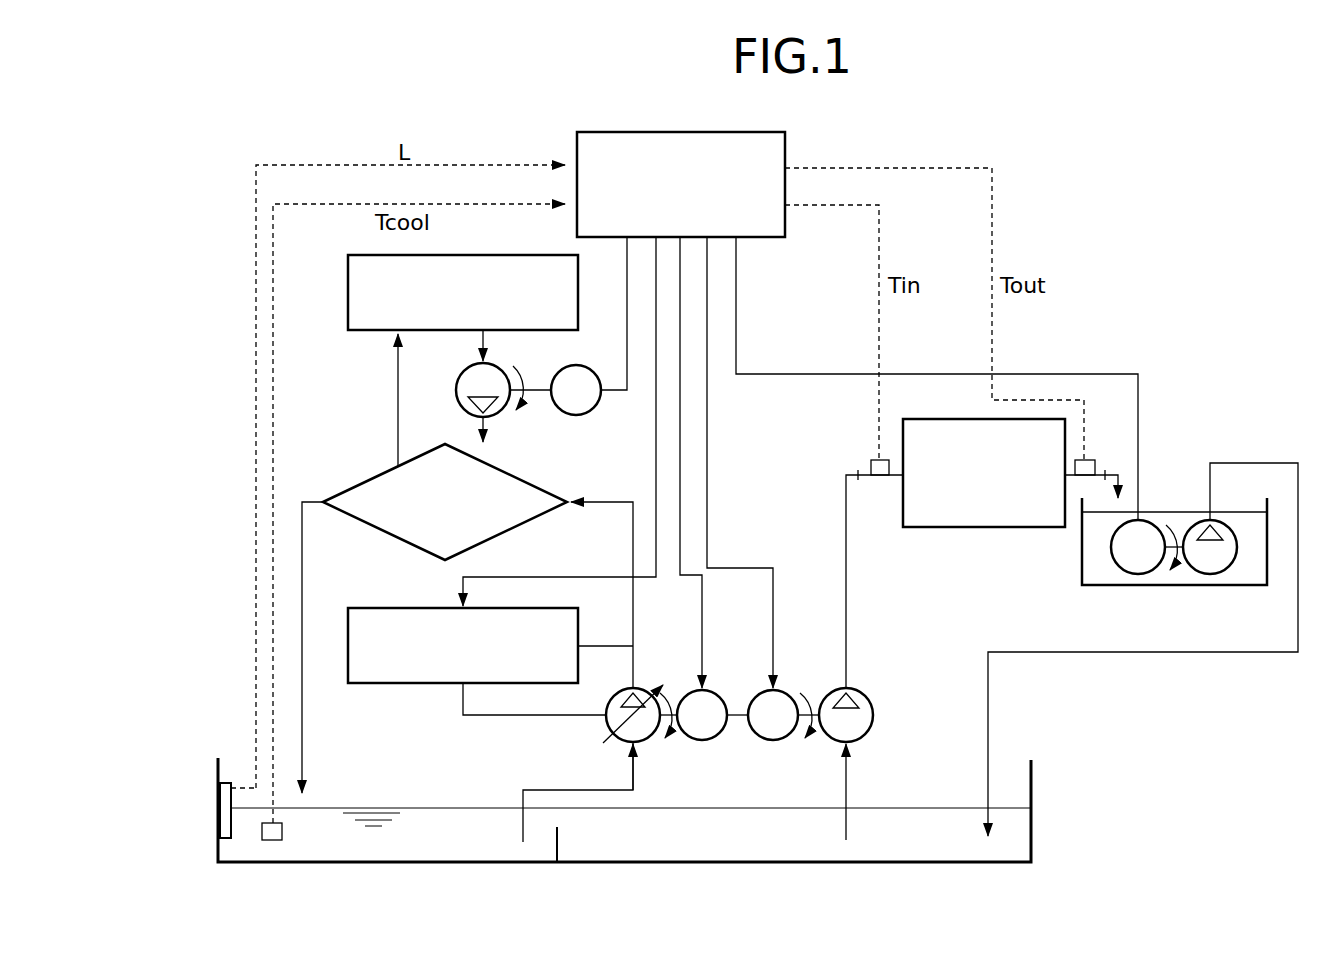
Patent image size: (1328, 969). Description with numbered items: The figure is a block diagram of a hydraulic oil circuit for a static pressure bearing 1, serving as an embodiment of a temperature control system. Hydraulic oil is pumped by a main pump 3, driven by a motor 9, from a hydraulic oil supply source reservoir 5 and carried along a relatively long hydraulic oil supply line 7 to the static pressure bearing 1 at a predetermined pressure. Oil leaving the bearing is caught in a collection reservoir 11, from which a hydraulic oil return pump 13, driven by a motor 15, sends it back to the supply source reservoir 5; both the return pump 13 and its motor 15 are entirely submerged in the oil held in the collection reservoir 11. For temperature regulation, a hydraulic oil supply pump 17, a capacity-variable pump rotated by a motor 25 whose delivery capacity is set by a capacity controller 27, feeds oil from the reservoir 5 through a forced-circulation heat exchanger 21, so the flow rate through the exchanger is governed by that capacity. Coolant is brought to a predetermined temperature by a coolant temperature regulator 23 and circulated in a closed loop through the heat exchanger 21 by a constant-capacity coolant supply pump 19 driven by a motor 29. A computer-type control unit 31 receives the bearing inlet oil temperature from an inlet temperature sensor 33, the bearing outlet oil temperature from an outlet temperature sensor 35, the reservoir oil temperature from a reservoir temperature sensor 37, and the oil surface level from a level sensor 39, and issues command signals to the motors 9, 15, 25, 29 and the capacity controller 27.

The static pressure bearing 1 is at (978, 527).
The main pump 3 is at (853, 690).
The hydraulic oil supply source reservoir 5 is at (1033, 776).
The hydraulic oil supply line 7 is at (846, 555).
The motor 9 is at (783, 690).
The collection reservoir 11 is at (1082, 548).
The hydraulic oil return pump 13 is at (1213, 517).
The motor 15 is at (1148, 520).
The hydraulic oil supply pump 17 is at (640, 690).
The coolant supply pump 19 is at (500, 372).
The heat exchanger 21 is at (505, 470).
The coolant temperature regulator 23 is at (480, 255).
The motor 25 is at (712, 690).
The capacity controller 27 is at (408, 683).
The motor 29 is at (590, 410).
The control unit 31 is at (705, 132).
The inlet temperature sensor 33 is at (870, 460).
The outlet temperature sensor 35 is at (1097, 458).
The reservoir temperature sensor 37 is at (275, 840).
The level sensor 39 is at (218, 773).